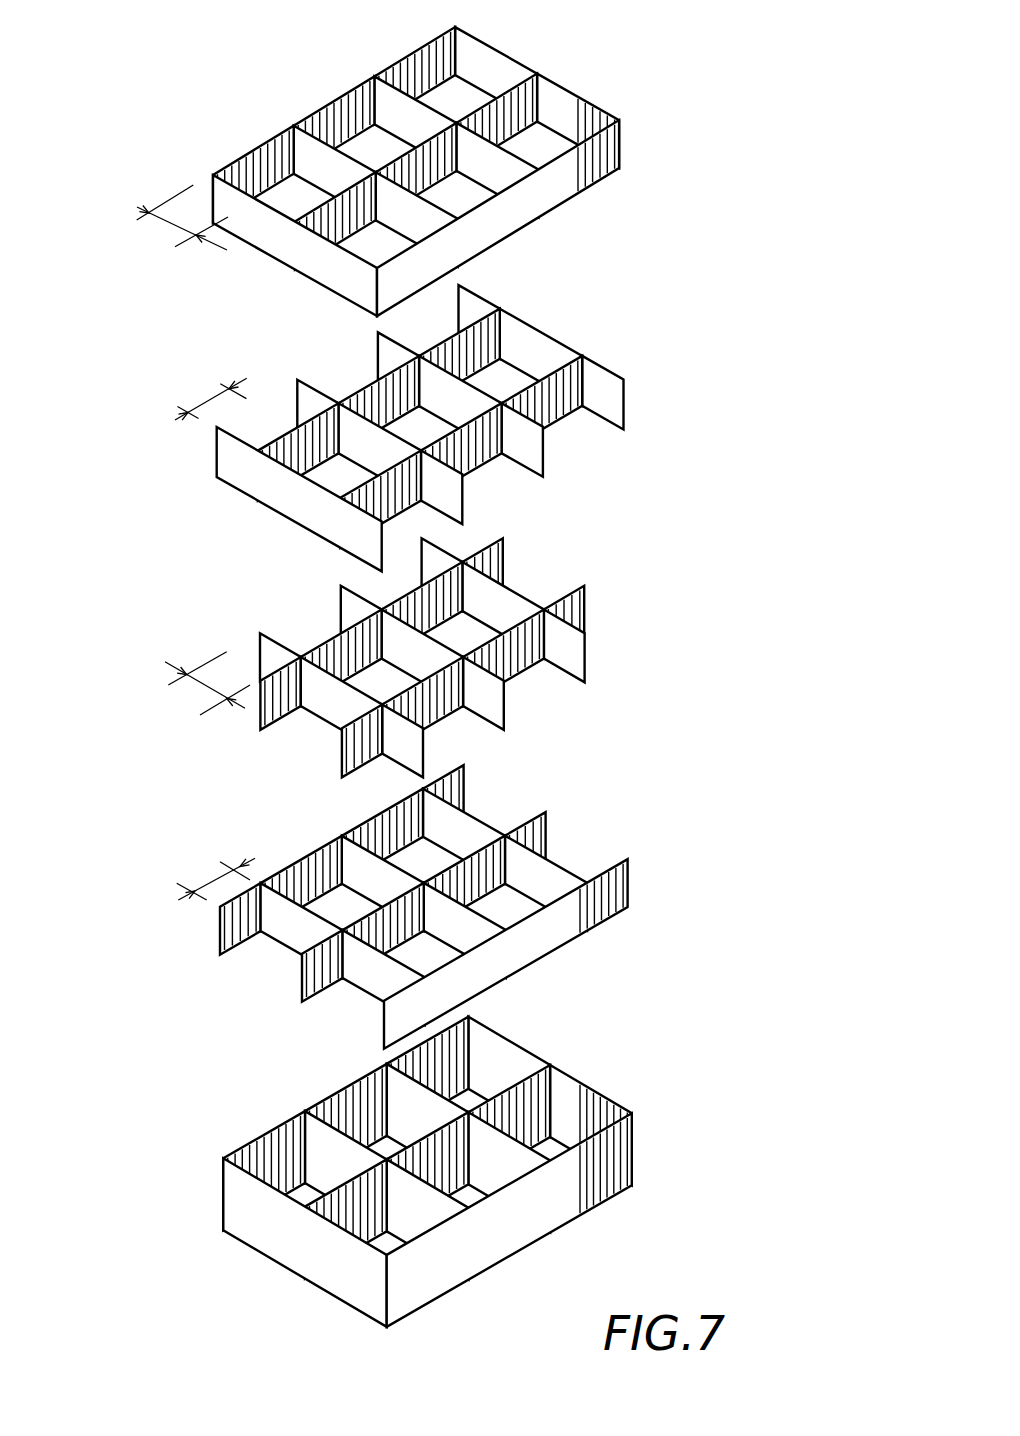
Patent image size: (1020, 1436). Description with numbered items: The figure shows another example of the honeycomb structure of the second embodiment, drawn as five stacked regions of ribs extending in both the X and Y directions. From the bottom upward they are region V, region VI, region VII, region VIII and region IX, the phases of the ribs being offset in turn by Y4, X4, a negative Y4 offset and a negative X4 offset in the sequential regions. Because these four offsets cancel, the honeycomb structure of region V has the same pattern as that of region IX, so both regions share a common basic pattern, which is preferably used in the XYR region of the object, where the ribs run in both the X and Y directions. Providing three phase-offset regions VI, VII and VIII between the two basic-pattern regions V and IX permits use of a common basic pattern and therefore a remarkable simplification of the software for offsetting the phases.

The region IX is at (333, 171).
The region VIII is at (338, 428).
The region VII is at (325, 657).
The region VI is at (350, 907).
The region V is at (351, 1172).
The XYR region XYR is at (116, 726).
The phase offset X4 is at (207, 685).
The phase offset Y4 is at (216, 875).